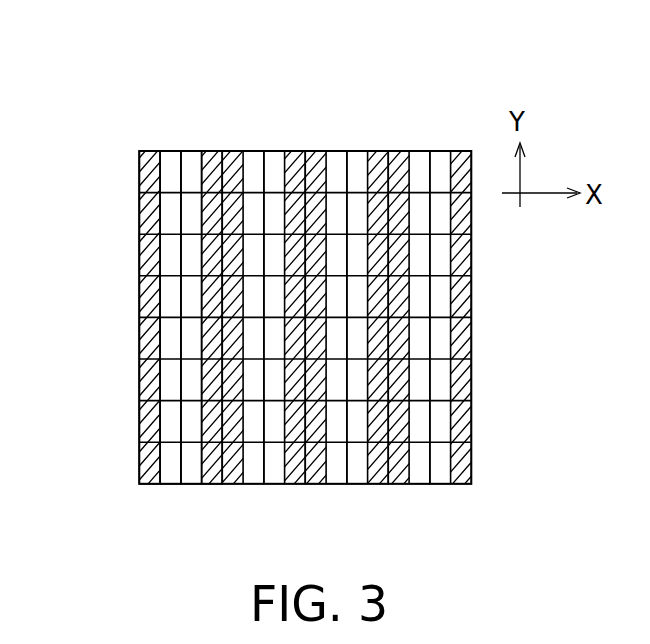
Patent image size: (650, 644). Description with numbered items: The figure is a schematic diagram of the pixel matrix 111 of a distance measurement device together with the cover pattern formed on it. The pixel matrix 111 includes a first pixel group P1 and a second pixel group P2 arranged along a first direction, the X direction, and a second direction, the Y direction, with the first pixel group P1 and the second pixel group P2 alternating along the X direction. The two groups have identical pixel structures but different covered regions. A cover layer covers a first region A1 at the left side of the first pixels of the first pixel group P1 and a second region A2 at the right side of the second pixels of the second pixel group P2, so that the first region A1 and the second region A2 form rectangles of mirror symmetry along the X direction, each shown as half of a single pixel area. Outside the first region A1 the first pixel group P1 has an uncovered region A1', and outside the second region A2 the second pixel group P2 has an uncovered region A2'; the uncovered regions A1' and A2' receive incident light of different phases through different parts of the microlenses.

The pixel matrix 111 is at (128, 117).
The first pixel group P1 is at (180, 150).
The second pixel group P2 is at (222, 150).
The first region A1 is at (145, 356).
The uncovered region A1' is at (181, 356).
The uncovered region A2' is at (219, 356).
The second region A2 is at (248, 356).